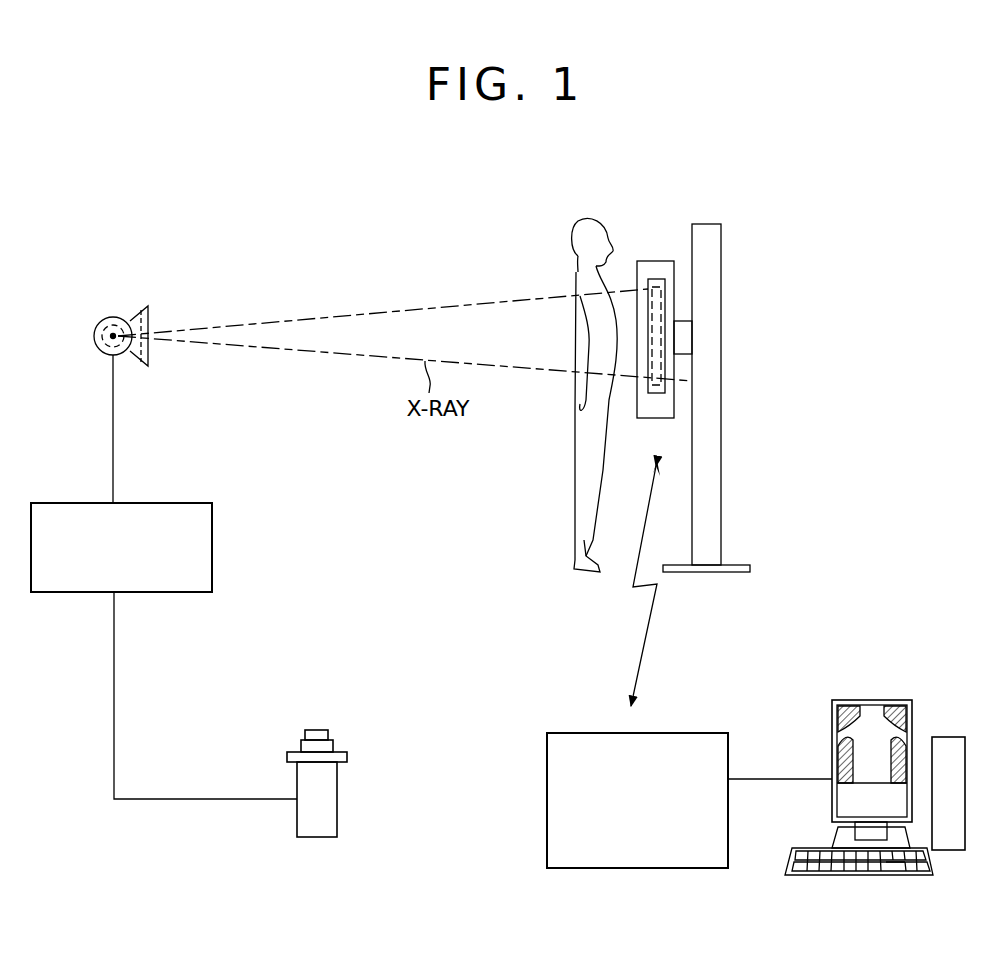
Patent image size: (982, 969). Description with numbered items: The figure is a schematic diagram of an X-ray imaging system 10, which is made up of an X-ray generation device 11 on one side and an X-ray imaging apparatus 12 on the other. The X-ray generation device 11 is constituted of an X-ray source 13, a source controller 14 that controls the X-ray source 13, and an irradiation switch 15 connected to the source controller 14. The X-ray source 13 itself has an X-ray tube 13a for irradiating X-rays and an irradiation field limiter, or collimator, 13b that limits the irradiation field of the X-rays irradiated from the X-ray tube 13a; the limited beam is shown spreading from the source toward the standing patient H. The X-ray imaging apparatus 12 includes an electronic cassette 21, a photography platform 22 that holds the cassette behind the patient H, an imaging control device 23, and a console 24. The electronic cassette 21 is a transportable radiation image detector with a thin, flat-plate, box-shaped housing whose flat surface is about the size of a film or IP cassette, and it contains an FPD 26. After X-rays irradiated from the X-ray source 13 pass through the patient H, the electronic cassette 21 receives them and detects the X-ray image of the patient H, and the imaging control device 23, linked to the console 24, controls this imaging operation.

The X-ray imaging system 10 is at (360, 190).
The X-ray generation device 11 is at (69, 234).
The X-ray imaging apparatus 12 is at (777, 197).
The X-ray source 13 is at (101, 309).
The X-ray tube 13a is at (93, 334).
The irradiation field limiter (collimator) 13b is at (151, 305).
The source controller 14 is at (70, 503).
The irradiation switch 15 is at (297, 823).
The electronic cassette 21 is at (655, 278).
The photography platform 22 is at (721, 291).
The imaging control device 23 is at (699, 733).
The console 24 is at (906, 700).
The FPD 26 is at (670, 380).
The patient H is at (577, 462).